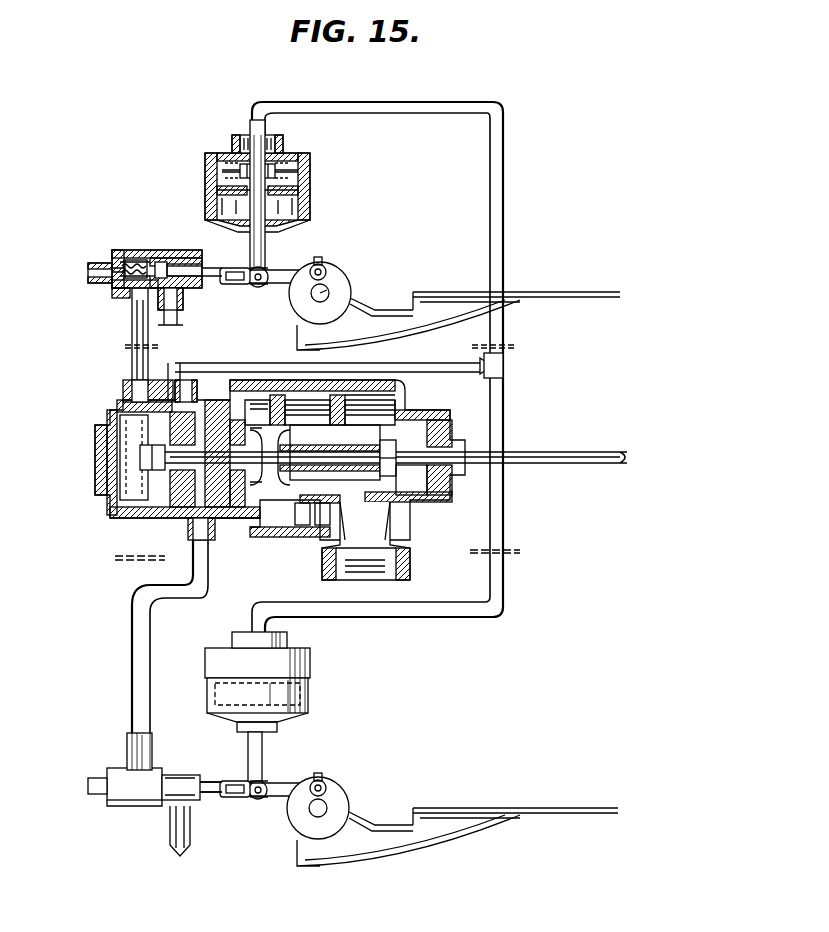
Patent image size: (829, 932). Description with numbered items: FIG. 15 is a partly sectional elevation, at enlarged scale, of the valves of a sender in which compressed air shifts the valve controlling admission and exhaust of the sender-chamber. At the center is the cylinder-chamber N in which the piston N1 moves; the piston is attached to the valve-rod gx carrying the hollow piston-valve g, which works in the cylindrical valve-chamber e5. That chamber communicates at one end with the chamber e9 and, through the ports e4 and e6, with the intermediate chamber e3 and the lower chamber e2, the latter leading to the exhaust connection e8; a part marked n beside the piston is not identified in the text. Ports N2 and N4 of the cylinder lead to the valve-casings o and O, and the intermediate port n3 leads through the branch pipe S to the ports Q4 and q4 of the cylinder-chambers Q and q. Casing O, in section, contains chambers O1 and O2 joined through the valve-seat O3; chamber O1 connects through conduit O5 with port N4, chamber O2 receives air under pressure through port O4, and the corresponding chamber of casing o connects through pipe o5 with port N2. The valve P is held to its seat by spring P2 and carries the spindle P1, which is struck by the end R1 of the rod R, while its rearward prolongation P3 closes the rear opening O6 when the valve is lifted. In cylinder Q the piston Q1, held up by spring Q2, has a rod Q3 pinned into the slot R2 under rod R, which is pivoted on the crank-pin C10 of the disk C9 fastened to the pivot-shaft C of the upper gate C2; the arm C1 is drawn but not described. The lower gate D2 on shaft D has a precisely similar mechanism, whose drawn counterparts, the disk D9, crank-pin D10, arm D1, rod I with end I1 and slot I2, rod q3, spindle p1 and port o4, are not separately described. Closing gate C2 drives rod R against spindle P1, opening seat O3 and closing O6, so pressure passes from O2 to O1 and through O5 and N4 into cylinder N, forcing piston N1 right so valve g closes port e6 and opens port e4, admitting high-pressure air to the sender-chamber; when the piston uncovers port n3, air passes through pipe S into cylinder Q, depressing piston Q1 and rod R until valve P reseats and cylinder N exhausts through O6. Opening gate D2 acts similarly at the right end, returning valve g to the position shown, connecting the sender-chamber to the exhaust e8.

The upper cylinder-chamber Q is at (310, 190).
The piston Q1 is at (300, 206).
The spring Q2 is at (274, 215).
The piston rod Q3 is at (266, 244).
The port of cylinder-chamber Q Q4 is at (268, 127).
The rod R is at (272, 290).
The end of rod R R1 is at (228, 288).
The slot R2 is at (253, 290).
The pivot-shaft of upper gate C is at (330, 291).
The cam arm C1 is at (408, 324).
The upper gate C2 is at (552, 288).
The disk C9 is at (326, 268).
The crank-pin C10 is at (317, 253).
The valve-casing O is at (157, 260).
The chamber O1 is at (130, 260).
The chamber O2 is at (186, 264).
The valve-seat O3 is at (165, 258).
The port O4 is at (180, 298).
The conduit O5 is at (132, 310).
The rear opening O6 is at (88, 273).
The valve P is at (137, 258).
The valve-spindle P1 is at (205, 268).
The spring P2 is at (112, 293).
The valve-spindle extension P3 is at (112, 268).
The branch pipe S is at (470, 363).
The cylinder-chamber N is at (172, 520).
The piston N1 is at (210, 540).
The port N2 is at (228, 535).
The port N4 is at (123, 397).
The nut n is at (162, 472).
The intermediate port n3 is at (198, 396).
The hollow piston-valve g is at (340, 420).
The valve-rod gx is at (535, 452).
The lower chamber e2 is at (385, 404).
The intermediate chamber e3 is at (303, 514).
The port e4 is at (323, 514).
The cylindrical valve-chamber e5 is at (411, 480).
The port e6 is at (366, 541).
The exhaust connection e8 is at (392, 552).
The upper chamber e9 is at (262, 451).
The lower cylinder-chamber q is at (278, 660).
The valve stem q3 is at (264, 748).
The port of cylinder-chamber q q4 is at (287, 633).
The lever arm I is at (284, 781).
The clevis I1 is at (226, 800).
The pivot pin I2 is at (250, 800).
The shaft of lower gate D is at (328, 806).
The cam arm D1 is at (408, 839).
The lower gate D2 is at (540, 804).
The roller D9 is at (326, 784).
The roller pin D10 is at (322, 776).
The valve-casing o is at (155, 787).
The outlet pipe o4 is at (175, 822).
The pipe o5 is at (127, 748).
The valve rod p1 is at (205, 782).